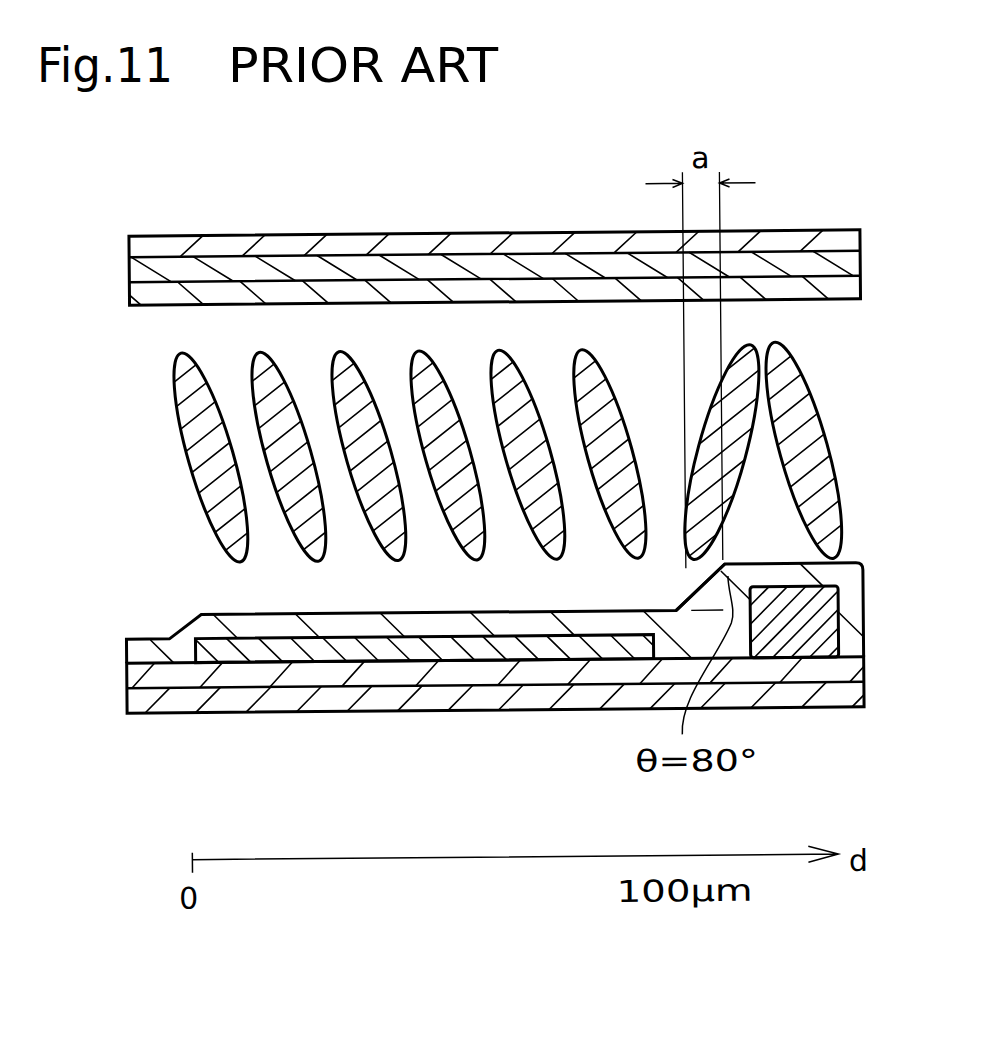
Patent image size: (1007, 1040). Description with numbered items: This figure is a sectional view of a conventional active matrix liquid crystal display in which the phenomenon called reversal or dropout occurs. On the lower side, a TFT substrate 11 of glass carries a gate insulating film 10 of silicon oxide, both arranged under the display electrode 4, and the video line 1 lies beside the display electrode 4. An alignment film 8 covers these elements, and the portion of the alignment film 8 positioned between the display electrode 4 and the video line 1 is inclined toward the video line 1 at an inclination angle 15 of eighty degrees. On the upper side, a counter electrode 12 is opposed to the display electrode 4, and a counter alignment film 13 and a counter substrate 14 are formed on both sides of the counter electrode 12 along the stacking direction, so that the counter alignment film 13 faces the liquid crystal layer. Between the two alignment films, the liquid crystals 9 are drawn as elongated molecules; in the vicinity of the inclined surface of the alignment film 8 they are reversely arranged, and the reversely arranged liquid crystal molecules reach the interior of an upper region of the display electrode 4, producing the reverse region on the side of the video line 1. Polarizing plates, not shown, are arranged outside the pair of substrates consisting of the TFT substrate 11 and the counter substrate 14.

The counter substrate 14 is at (152, 233).
The counter electrode 12 is at (225, 268).
The counter alignment film 13 is at (347, 291).
The liquid crystals 9 is at (818, 404).
The alignment film 8 is at (857, 565).
The inclination angle 15 is at (728, 586).
The video line 1 is at (837, 602).
The display electrode 4 is at (258, 651).
The gate insulating film 10 is at (483, 673).
The TFT substrate 11 is at (780, 696).